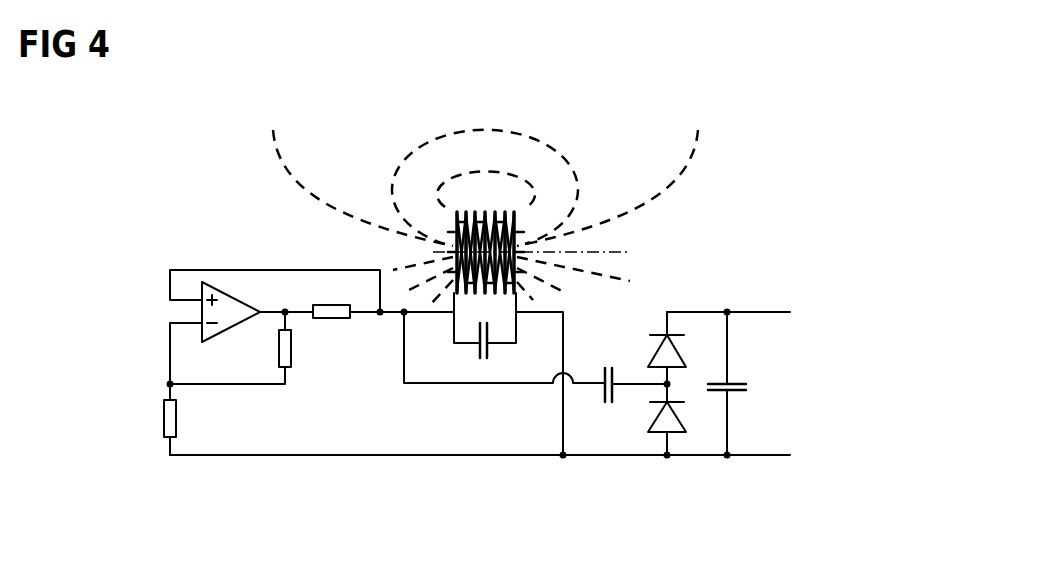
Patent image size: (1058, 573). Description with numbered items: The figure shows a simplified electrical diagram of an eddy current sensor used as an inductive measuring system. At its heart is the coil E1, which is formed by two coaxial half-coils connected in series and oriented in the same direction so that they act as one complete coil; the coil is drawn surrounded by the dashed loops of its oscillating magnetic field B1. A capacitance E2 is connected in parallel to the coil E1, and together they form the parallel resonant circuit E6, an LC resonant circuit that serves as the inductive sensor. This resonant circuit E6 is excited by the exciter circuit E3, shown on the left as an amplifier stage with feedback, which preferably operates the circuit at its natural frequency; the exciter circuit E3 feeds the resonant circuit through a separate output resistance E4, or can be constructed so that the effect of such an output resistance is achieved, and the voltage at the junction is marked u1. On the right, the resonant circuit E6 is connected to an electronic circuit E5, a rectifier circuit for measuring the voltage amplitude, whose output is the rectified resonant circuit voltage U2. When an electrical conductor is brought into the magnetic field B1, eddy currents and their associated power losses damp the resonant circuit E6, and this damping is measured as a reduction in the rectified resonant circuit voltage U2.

The coil E1 is at (490, 208).
The capacitor E2 is at (499, 350).
The exciter circuit E3 is at (472, 411).
The output resistance E4 is at (331, 328).
The electronic circuit E5 is at (593, 478).
The parallel resonant circuit E6 is at (497, 422).
The oscillating magnetic field B1 is at (319, 164).
The voltage u1 is at (489, 352).
The rectified resonant circuit voltage U2 is at (728, 297).